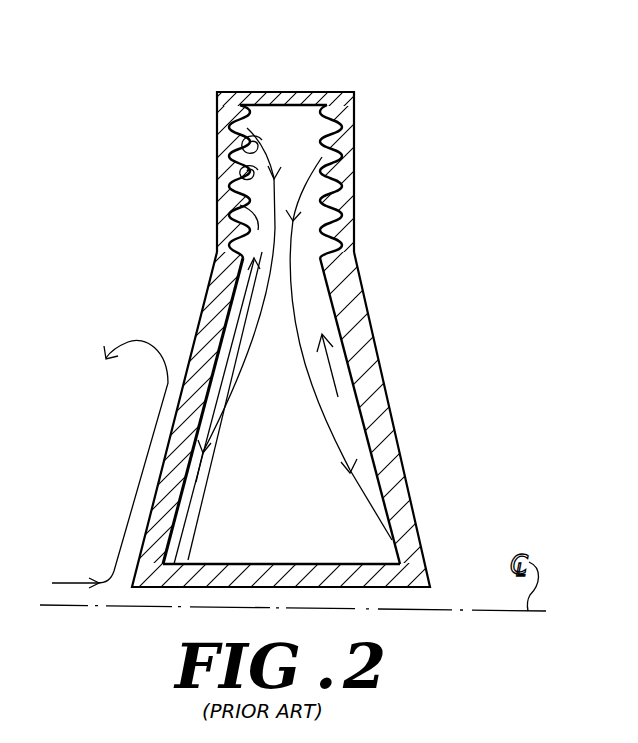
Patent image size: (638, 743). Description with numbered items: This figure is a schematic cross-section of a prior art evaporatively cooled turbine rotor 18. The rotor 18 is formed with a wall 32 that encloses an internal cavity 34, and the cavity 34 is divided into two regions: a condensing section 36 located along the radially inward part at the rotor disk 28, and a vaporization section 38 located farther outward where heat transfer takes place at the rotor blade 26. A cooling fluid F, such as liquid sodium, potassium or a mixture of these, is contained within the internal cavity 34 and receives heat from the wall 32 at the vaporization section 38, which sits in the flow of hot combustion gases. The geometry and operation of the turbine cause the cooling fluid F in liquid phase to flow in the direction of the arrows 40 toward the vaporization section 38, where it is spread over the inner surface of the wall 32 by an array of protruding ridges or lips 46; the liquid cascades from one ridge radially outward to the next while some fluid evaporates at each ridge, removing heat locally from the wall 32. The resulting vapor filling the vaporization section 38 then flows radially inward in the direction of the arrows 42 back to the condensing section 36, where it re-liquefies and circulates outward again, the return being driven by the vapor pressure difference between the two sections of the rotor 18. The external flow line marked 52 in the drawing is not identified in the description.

The rotor 18 is at (328, 64).
The rotor blade 26 is at (364, 203).
The rotor disk 28 is at (421, 478).
The wall 32 is at (383, 426).
The internal cavity 34 is at (276, 316).
The condensing section 36 is at (289, 508).
The vaporization section 38 is at (299, 141).
The arrows 40 is at (334, 378).
The arrows 42 is at (232, 381).
The protruding ridges or lips 46 is at (266, 164).
The external air flow 52 is at (137, 340).
The cooling fluid F is at (245, 132).